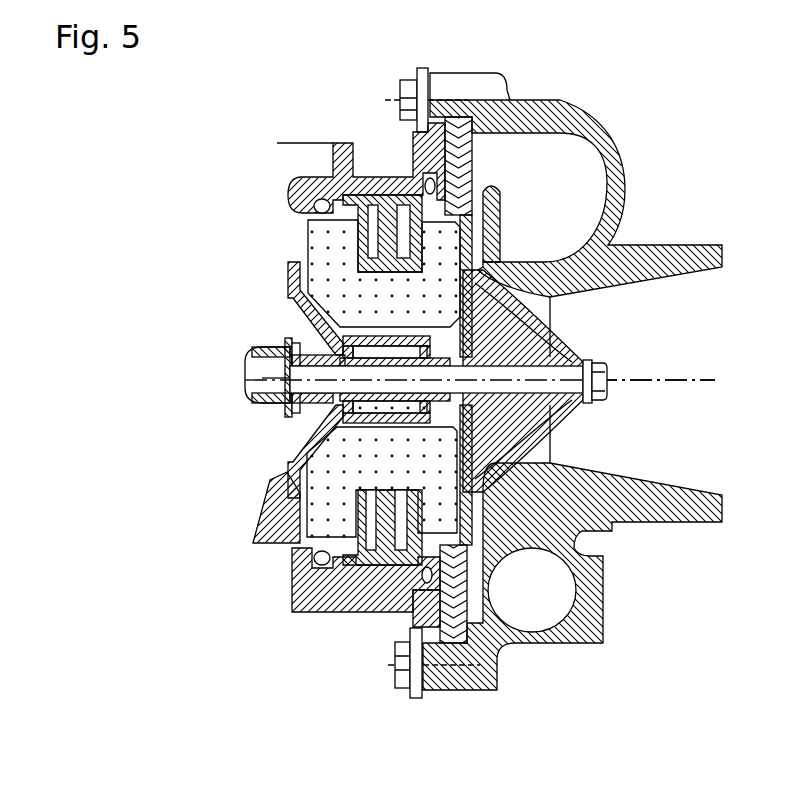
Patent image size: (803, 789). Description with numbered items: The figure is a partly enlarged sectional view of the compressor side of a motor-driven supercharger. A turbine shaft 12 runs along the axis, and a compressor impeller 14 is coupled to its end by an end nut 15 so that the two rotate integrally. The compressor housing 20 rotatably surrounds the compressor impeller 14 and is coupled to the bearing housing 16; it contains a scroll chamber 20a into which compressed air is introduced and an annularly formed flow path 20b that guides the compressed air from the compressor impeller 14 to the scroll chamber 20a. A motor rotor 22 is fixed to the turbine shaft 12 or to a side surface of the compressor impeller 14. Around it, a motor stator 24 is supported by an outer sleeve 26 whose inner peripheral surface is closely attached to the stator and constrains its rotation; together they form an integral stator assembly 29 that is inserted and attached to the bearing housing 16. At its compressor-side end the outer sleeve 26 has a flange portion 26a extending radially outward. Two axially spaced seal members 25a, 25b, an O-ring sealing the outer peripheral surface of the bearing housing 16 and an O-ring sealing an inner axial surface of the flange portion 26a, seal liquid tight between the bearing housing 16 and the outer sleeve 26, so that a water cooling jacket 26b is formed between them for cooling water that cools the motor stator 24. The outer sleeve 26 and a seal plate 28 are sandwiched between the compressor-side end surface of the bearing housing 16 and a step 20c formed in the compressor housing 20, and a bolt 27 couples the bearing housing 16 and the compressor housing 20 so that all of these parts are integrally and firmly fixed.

The turbine shaft 12 is at (270, 388).
The compressor impeller 14 is at (500, 410).
The end nut 15 is at (602, 367).
The bearing housing 16 is at (292, 142).
The compressor housing 20 is at (612, 138).
The scroll chamber 20a is at (570, 182).
The flow path 20b is at (478, 227).
The step 20c is at (461, 100).
The motor rotor 22 is at (360, 430).
The motor stator 24 is at (347, 230).
The seal member 25a is at (303, 195).
The seal member 25b is at (418, 587).
The outer sleeve 26 is at (386, 215).
The flange portion 26a is at (440, 627).
The water cooling jacket 26b is at (377, 555).
The bolt 27 is at (410, 87).
The seal plate 28 is at (475, 160).
The stator assembly 29 is at (385, 100).